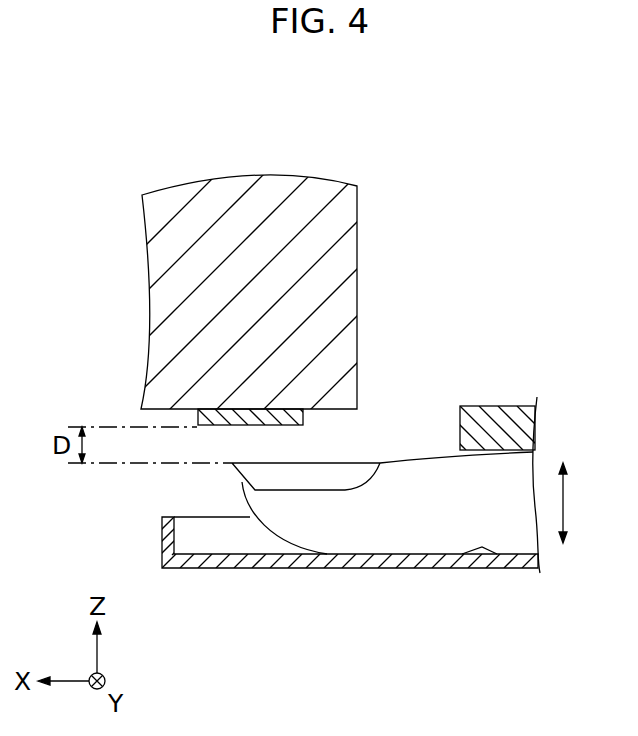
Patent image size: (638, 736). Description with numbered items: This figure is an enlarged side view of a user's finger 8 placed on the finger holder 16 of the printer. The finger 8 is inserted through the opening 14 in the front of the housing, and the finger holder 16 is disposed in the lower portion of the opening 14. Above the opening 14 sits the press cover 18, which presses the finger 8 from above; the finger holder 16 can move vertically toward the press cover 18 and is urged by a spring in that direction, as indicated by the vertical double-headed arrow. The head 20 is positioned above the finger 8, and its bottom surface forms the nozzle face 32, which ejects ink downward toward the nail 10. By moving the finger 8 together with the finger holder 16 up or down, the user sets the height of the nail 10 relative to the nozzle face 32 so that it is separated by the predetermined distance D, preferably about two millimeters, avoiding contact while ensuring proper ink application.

The finger 8 is at (417, 540).
The nail 10 is at (338, 475).
The opening 14 is at (510, 488).
The finger holder 16 is at (242, 570).
The press cover 18 is at (488, 406).
The head 20 is at (340, 262).
The nozzle face 32 is at (278, 425).